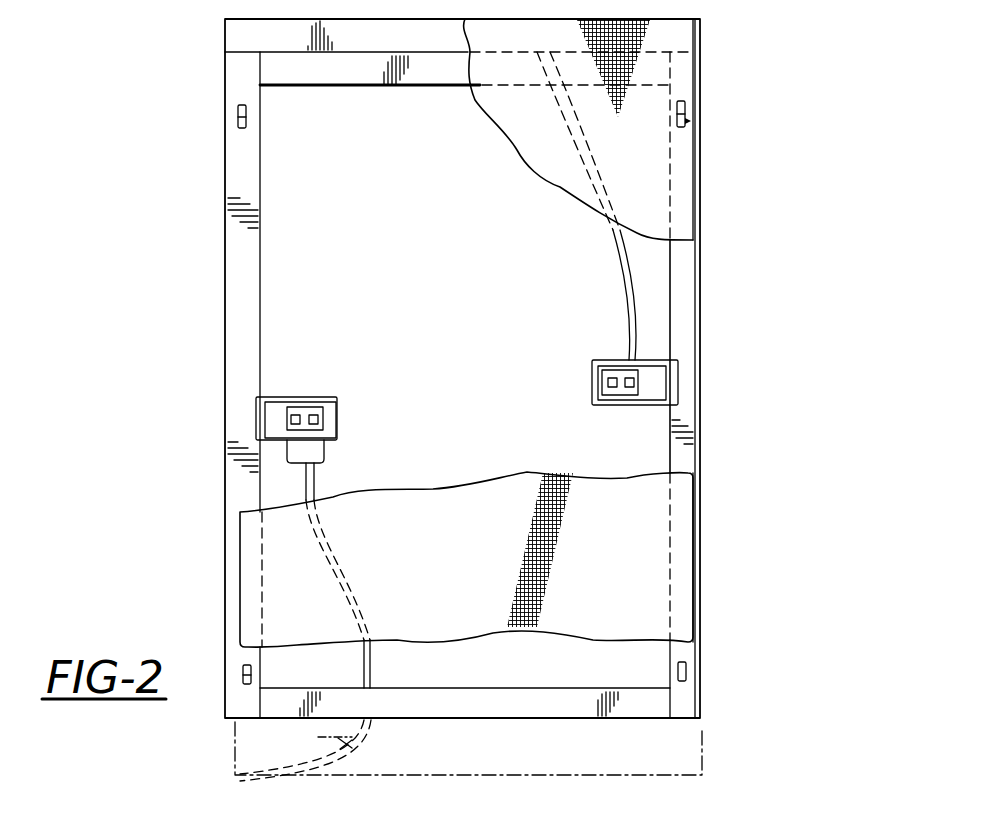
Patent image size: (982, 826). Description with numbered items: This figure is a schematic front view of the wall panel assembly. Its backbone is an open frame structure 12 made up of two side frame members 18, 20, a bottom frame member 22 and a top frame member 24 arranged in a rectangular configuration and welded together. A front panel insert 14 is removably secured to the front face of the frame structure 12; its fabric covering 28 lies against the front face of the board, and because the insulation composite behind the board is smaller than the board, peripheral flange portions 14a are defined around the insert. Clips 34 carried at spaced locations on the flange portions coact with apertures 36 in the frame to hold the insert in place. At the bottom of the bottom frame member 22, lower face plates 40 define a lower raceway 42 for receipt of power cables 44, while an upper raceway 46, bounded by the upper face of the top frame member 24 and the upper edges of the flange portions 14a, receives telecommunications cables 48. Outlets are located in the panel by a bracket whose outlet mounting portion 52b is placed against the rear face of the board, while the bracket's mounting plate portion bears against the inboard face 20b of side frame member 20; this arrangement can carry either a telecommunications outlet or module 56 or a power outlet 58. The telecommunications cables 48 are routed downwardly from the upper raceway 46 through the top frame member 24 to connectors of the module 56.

The open frame structure 12 is at (710, 283).
The front panel insert 14 is at (648, 190).
The peripheral flange portions 14a is at (685, 40).
The side frame member 18 is at (227, 390).
The side frame member 20 is at (700, 352).
The inboard face of frame member 20b is at (667, 292).
The bottom frame member 22 is at (518, 712).
The top frame member 24 is at (405, 84).
The fabric covering 28 is at (550, 133).
The clips 34 is at (692, 121).
The apertures 36 is at (245, 122).
The lower face plates 40 is at (318, 737).
The lower raceway 42 is at (666, 752).
The power cables 44 is at (372, 676).
The upper raceway 46 is at (224, 33).
The telecommunications cables 48 is at (617, 232).
The outlet mounting portion 52b is at (320, 397).
The telecommunications outlet or module 56 is at (606, 383).
The power outlet 58 is at (324, 460).